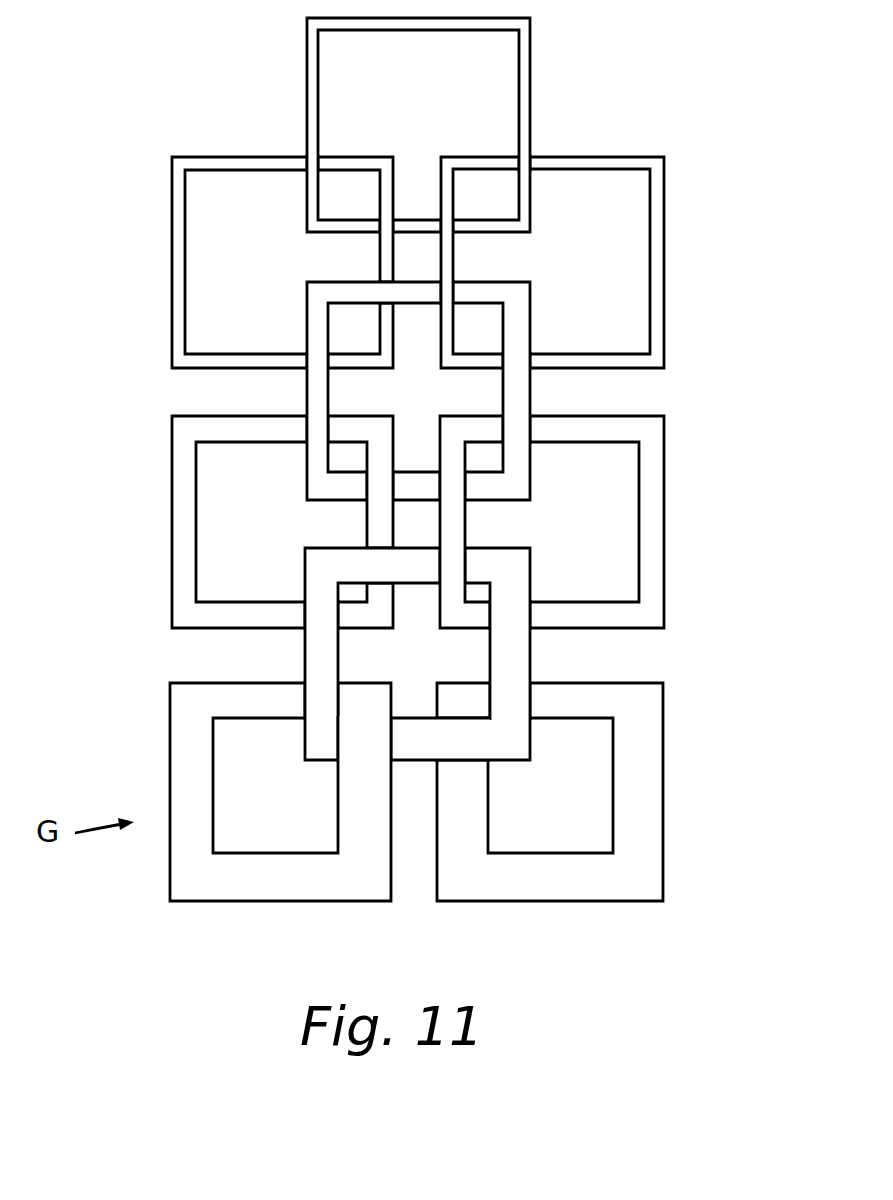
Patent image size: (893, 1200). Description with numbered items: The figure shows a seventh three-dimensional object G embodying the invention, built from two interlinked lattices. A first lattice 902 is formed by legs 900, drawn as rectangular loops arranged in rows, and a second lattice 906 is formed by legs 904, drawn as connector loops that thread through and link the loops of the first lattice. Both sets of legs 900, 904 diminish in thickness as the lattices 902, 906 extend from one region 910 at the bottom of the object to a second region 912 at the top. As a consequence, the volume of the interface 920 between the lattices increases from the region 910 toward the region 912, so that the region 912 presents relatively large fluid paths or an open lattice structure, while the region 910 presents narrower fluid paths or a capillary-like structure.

The legs 900 is at (664, 278).
The legs 904 is at (307, 108).
The interface 920 is at (455, 90).
The second region 912 is at (228, 70).
The region 910 is at (250, 963).
The second lattice 906 is at (296, 652).
The lattice 902 is at (566, 908).